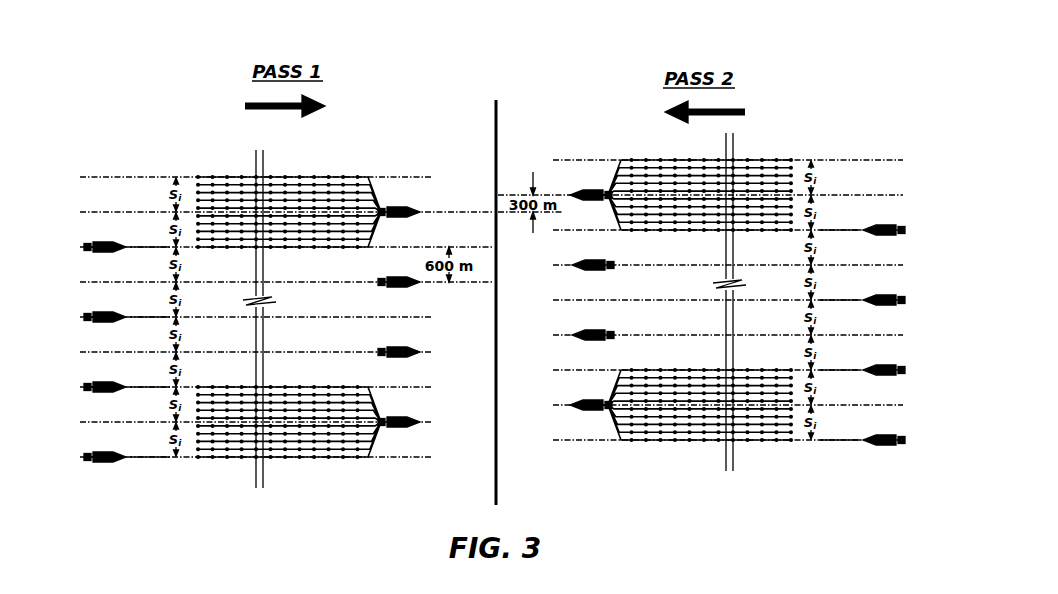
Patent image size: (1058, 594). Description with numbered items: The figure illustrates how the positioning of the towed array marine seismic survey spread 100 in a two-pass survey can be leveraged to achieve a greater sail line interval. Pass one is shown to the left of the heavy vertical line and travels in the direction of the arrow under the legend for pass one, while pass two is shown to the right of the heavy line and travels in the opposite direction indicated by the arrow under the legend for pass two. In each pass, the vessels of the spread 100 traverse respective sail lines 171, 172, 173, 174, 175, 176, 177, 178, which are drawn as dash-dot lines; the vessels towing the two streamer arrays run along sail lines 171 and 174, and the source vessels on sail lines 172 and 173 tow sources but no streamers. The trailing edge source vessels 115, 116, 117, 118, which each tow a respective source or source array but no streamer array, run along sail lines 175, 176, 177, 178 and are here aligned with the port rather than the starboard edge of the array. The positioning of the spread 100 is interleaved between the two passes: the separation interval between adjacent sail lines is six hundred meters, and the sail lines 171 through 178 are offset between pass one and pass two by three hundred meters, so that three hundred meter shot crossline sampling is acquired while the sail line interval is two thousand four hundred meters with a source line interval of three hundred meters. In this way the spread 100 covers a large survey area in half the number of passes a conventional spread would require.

The marine seismic survey spread 100 is at (150, 157).
The source vessel 115 is at (117, 242).
The source vessel 116 is at (117, 312).
The source vessel 117 is at (117, 382).
The source vessel 118 is at (117, 452).
The sail line 171 is at (430, 216).
The sail line 172 is at (430, 286).
The sail line 173 is at (430, 356).
The sail line 174 is at (430, 426).
The sail line 175 is at (139, 250).
The sail line 176 is at (139, 320).
The sail line 177 is at (139, 390).
The sail line 178 is at (139, 460).